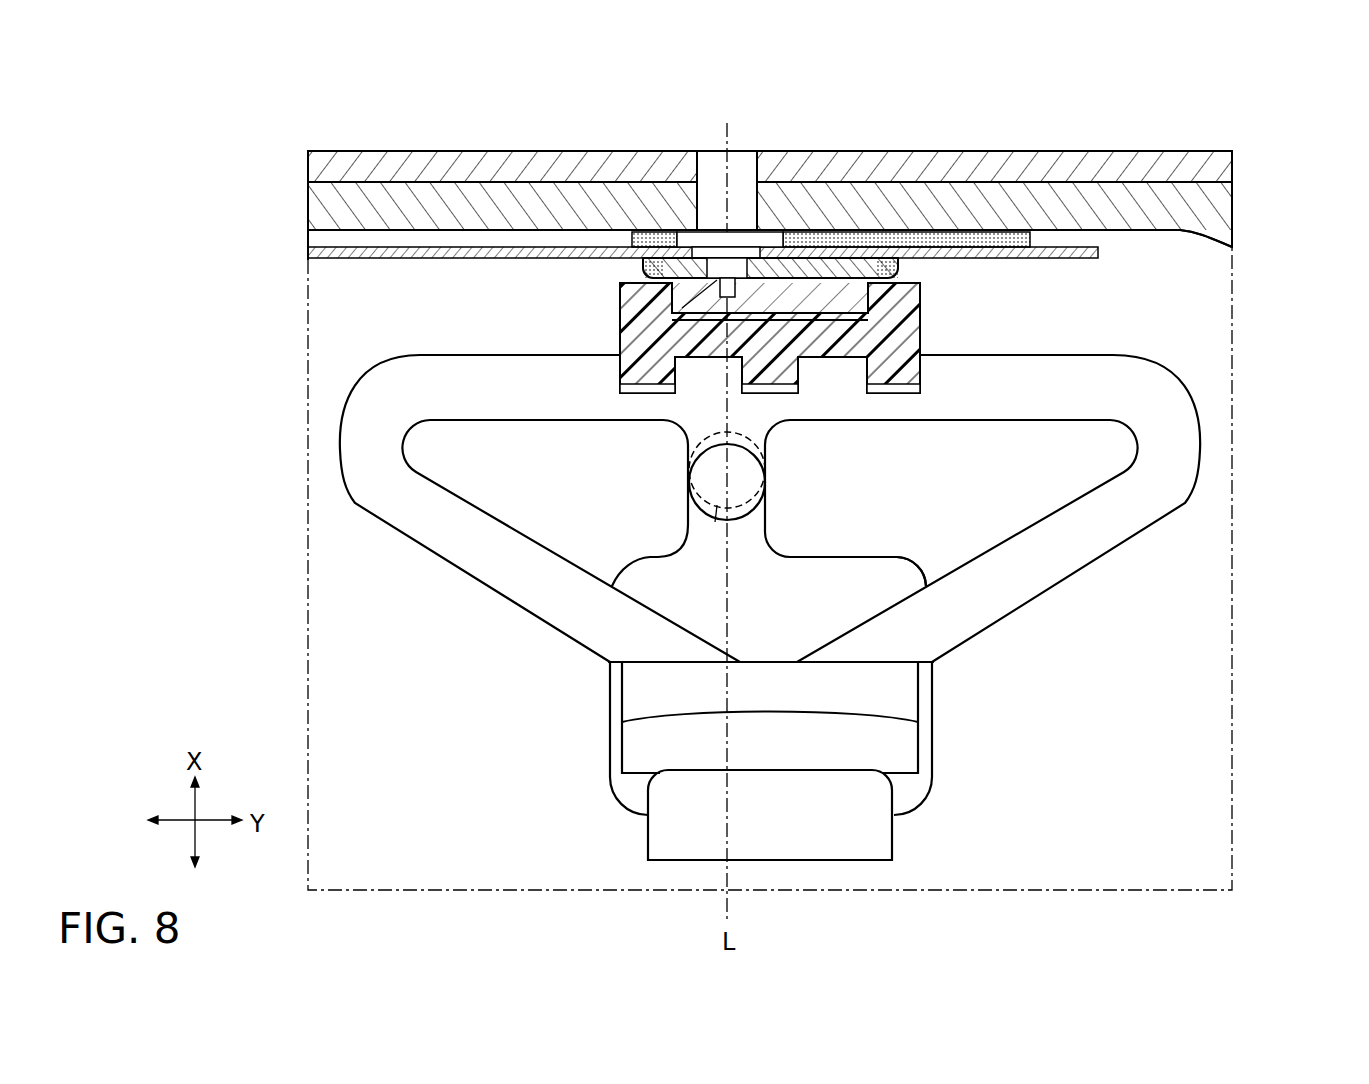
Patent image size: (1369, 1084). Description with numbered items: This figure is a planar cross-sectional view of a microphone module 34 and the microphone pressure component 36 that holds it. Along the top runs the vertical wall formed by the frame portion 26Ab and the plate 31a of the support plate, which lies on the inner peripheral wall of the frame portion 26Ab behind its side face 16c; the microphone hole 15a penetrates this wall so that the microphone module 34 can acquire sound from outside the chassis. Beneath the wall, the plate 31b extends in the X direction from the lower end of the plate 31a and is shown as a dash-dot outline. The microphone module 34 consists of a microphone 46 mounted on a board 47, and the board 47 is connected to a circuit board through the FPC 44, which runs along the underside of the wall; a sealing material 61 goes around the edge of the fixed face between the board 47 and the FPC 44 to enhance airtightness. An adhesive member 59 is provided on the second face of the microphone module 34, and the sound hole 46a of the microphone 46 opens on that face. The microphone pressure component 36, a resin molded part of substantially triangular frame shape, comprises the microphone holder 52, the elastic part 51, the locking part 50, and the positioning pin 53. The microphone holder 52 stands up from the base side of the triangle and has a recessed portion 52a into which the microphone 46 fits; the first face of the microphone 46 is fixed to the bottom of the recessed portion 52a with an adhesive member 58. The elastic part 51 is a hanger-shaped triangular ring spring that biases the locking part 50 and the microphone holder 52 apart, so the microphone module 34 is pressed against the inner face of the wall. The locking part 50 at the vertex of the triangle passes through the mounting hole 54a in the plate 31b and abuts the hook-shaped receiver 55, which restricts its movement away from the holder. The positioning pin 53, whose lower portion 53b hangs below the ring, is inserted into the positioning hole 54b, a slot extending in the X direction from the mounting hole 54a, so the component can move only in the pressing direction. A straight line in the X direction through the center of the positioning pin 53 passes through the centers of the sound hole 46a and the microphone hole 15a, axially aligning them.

The frame portion 26Ab is at (527, 145).
The sealing material 61 is at (643, 275).
The board 47 is at (716, 284).
The microphone hole 15a is at (742, 160).
The adhesive member 58 is at (800, 287).
The microphone 46 is at (808, 278).
The microphone module 34 is at (868, 150).
The adhesive member 59 is at (988, 240).
The side face 16c is at (1042, 150).
The plate 31a is at (1127, 193).
The FPC 44 is at (367, 260).
The sound hole 46a is at (680, 306).
The microphone holder 52 is at (632, 340).
The recessed portion 52a is at (870, 303).
The positioning hole 54b is at (702, 462).
The positioning pin 53 is at (752, 488).
The mounting hole 54a is at (817, 573).
The elastic part 51 is at (1178, 457).
The microphone pressure component 36 is at (1112, 562).
The ball lower portion 53b is at (717, 505).
The plate 31b is at (480, 845).
The receiver 55 is at (852, 845).
The locking part 50 is at (897, 752).